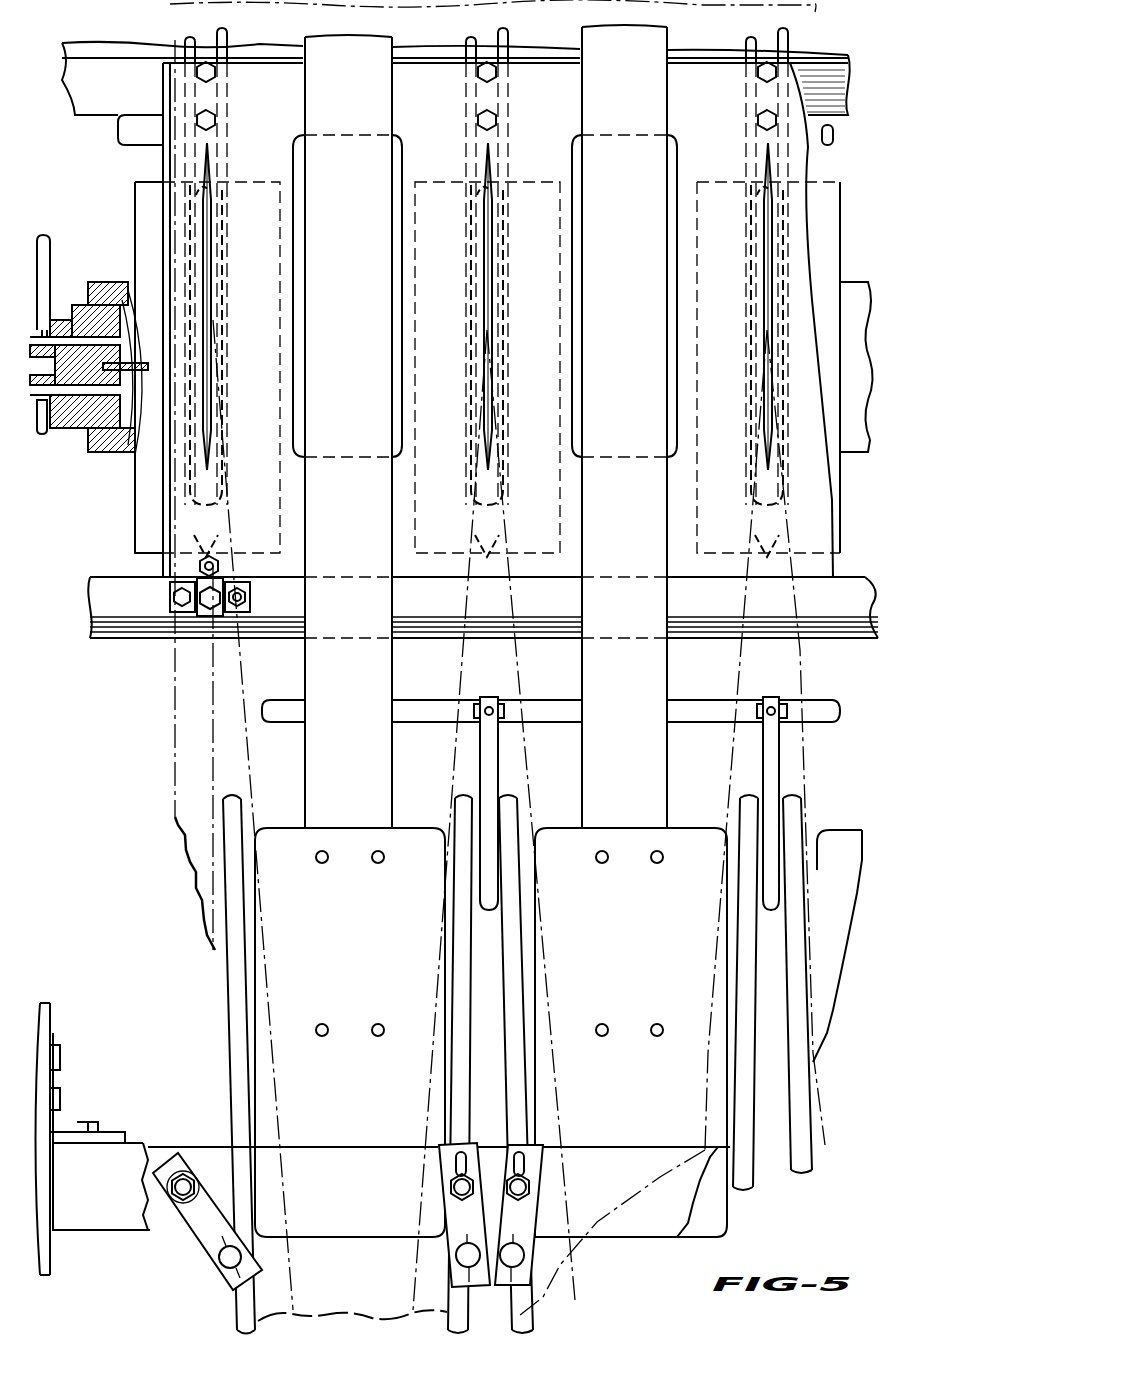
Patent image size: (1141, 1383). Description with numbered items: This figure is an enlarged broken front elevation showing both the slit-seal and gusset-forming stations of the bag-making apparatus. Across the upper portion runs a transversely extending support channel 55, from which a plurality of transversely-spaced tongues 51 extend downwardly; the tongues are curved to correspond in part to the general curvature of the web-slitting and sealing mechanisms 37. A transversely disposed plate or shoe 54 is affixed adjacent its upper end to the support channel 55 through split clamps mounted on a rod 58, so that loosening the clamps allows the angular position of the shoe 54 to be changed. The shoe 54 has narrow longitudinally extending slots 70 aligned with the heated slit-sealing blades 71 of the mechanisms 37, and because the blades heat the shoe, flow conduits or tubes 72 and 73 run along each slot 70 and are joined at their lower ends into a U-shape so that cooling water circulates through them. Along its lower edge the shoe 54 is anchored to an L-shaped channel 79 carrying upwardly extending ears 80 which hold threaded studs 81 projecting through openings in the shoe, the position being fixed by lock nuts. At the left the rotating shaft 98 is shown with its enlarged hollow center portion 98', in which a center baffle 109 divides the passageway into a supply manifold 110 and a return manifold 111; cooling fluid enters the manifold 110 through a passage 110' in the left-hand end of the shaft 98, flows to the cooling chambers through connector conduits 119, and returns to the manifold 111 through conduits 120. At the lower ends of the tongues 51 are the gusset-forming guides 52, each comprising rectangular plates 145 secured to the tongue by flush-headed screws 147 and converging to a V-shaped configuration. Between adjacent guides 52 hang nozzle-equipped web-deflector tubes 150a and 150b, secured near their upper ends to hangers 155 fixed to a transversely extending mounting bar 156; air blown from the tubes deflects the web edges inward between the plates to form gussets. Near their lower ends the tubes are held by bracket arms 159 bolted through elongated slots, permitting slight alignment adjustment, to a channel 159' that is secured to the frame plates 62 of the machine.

The support channel 55 is at (88, 62).
The flow conduit or tube 73 is at (183, 45).
The flow conduit or tube 72 is at (224, 38).
The tongue 51 is at (383, 45).
The rod 58 is at (143, 118).
The plate or shoe 54 is at (165, 162).
The slot 70 is at (208, 168).
The slit-sealing blade 71 is at (210, 216).
The web-slitting and sealing mechanism 37 is at (138, 225).
The conduit 120 is at (52, 250).
The shaft 98 is at (75, 305).
The exhaust or return passage or manifold 111 is at (130, 312).
The connector conduit 119 is at (42, 436).
The passage 110' is at (79, 442).
The center portion of shaft 98' is at (75, 424).
The center baffle 109 is at (133, 428).
The supply passage or manifold 110 is at (117, 396).
The threaded stud 81 is at (199, 566).
The L-shaped channel 79 is at (92, 606).
The ear 80 is at (205, 614).
The mounting bar 156 is at (575, 690).
The hanger 155 is at (498, 775).
The gusset-forming guide 52 is at (352, 836).
The screw 147 is at (378, 863).
The plate 145 is at (360, 952).
The nozzle-equipped tube 150a is at (460, 988).
The nozzle-equipped tube 150b is at (523, 993).
The channel 159' is at (390, 1159).
The frame plate 62 is at (38, 1245).
The arm 159 is at (390, 1216).